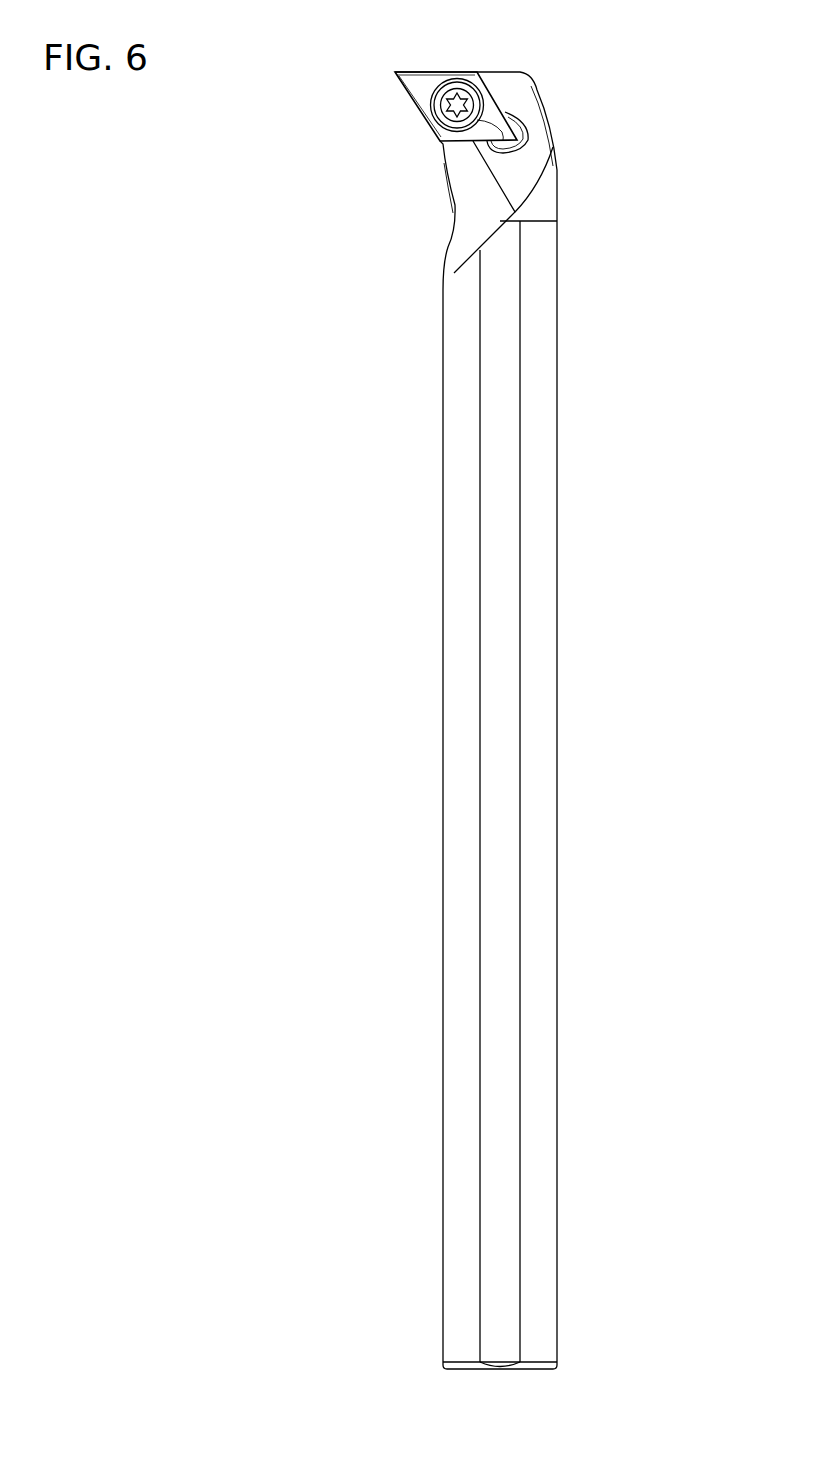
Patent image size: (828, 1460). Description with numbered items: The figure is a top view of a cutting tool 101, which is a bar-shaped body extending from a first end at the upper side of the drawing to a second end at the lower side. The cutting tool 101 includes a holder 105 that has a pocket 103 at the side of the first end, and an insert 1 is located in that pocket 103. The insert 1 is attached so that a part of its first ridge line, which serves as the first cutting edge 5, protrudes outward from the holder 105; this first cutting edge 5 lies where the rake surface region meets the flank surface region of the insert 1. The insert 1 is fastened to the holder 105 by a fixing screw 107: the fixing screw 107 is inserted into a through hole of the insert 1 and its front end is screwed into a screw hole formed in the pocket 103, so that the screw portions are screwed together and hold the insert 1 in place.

The insert 1 is at (423, 83).
The first cutting edge 5 is at (421, 72).
The cutting tool 101 is at (327, 270).
The pocket 103 is at (430, 115).
The holder 105 is at (503, 538).
The fixing screw 107 is at (500, 98).